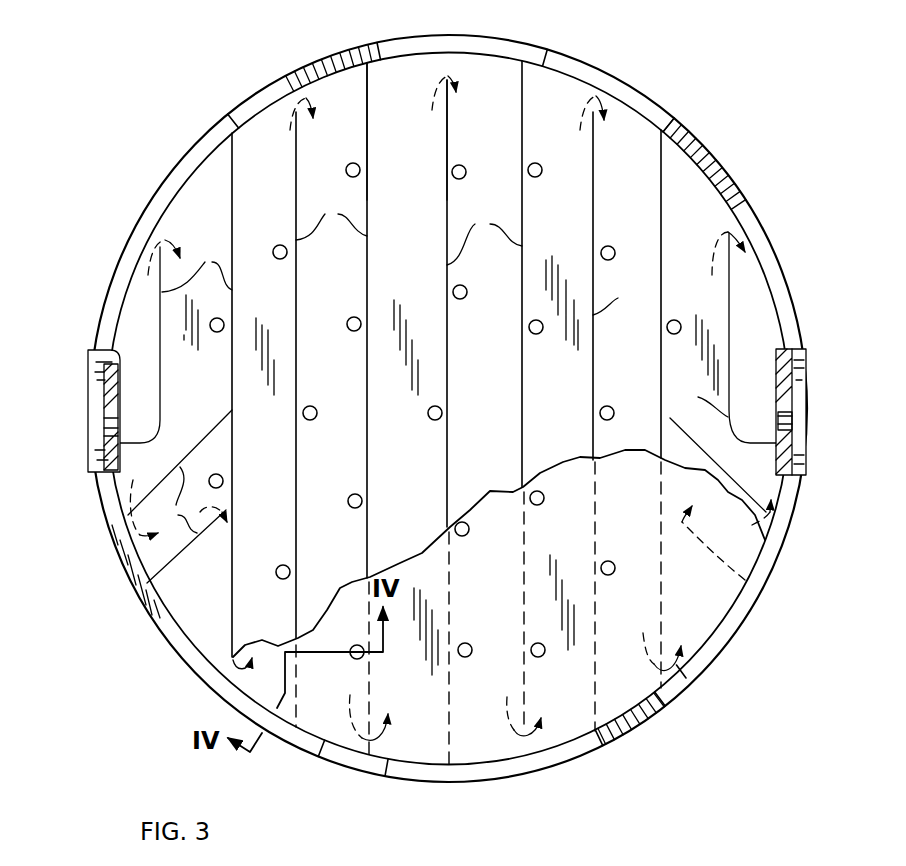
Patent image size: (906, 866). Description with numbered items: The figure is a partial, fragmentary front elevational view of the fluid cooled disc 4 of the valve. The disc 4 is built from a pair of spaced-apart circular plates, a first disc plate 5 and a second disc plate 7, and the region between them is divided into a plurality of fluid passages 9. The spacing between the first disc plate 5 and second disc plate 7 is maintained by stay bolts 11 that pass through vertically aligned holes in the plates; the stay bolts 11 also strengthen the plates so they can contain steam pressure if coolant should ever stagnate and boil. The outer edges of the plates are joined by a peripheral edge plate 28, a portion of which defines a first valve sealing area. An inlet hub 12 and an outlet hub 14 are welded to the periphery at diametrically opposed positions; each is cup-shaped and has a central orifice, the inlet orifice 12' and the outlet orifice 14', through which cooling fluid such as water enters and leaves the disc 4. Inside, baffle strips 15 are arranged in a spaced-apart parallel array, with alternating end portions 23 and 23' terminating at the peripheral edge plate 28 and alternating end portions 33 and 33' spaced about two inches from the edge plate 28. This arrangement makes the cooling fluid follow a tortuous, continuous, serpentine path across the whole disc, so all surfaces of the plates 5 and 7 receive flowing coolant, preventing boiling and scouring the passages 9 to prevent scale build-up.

The fluid cooled disc 4 is at (248, 92).
The first disc plate 5 is at (422, 553).
The second disc plate 7 is at (418, 288).
The fluid passages 9 is at (145, 403).
The stay bolts 11 is at (278, 246).
The inlet hub 12 is at (80, 398).
The inlet orifice 12' is at (94, 450).
The outlet hub 14 is at (770, 418).
The outlet orifice 14' is at (823, 403).
The baffle strips 15 is at (714, 568).
The end portions of baffle strips 23 is at (447, 391).
The end portions of baffle strips 23' is at (488, 736).
The peripheral edge plate 28 is at (668, 712).
The end portions of baffle strips 33 is at (487, 703).
The end portions of baffle strips 33' is at (446, 153).